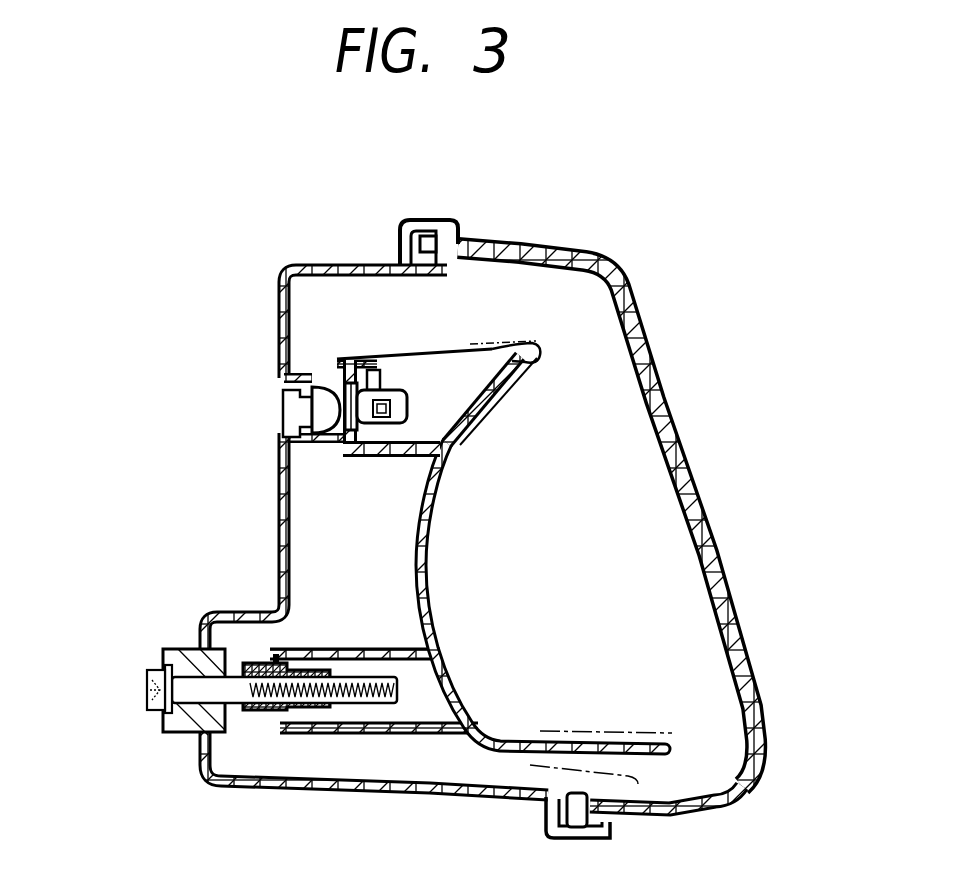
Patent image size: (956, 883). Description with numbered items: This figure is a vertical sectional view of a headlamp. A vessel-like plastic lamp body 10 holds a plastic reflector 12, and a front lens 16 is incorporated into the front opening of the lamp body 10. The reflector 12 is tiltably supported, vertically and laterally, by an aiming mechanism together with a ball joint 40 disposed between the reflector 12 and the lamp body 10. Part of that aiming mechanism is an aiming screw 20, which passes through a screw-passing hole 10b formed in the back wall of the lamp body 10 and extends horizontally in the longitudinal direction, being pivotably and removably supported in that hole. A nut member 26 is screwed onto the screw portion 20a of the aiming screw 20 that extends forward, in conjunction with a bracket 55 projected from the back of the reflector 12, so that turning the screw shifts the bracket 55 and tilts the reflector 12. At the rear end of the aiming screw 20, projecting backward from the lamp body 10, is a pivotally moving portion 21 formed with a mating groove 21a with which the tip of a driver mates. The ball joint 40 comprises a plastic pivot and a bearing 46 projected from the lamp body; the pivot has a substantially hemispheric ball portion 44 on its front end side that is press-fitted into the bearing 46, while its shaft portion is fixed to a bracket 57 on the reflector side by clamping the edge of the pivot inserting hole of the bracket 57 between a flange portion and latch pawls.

The lamp body 10 is at (278, 527).
The screw-passing hole 10b is at (192, 733).
The reflector 12 is at (410, 526).
The front lens 16 is at (707, 488).
The aiming screw 20 is at (232, 729).
The screw portion 20a is at (365, 704).
The pivotally moving portion 21 is at (117, 660).
The mating groove 21a is at (143, 697).
The nut member 26 is at (318, 712).
The ball joint 40 is at (296, 293).
The ball portion 44 is at (313, 405).
The bearing 46 is at (318, 386).
The bracket 55 is at (328, 649).
The bracket 57 is at (450, 355).